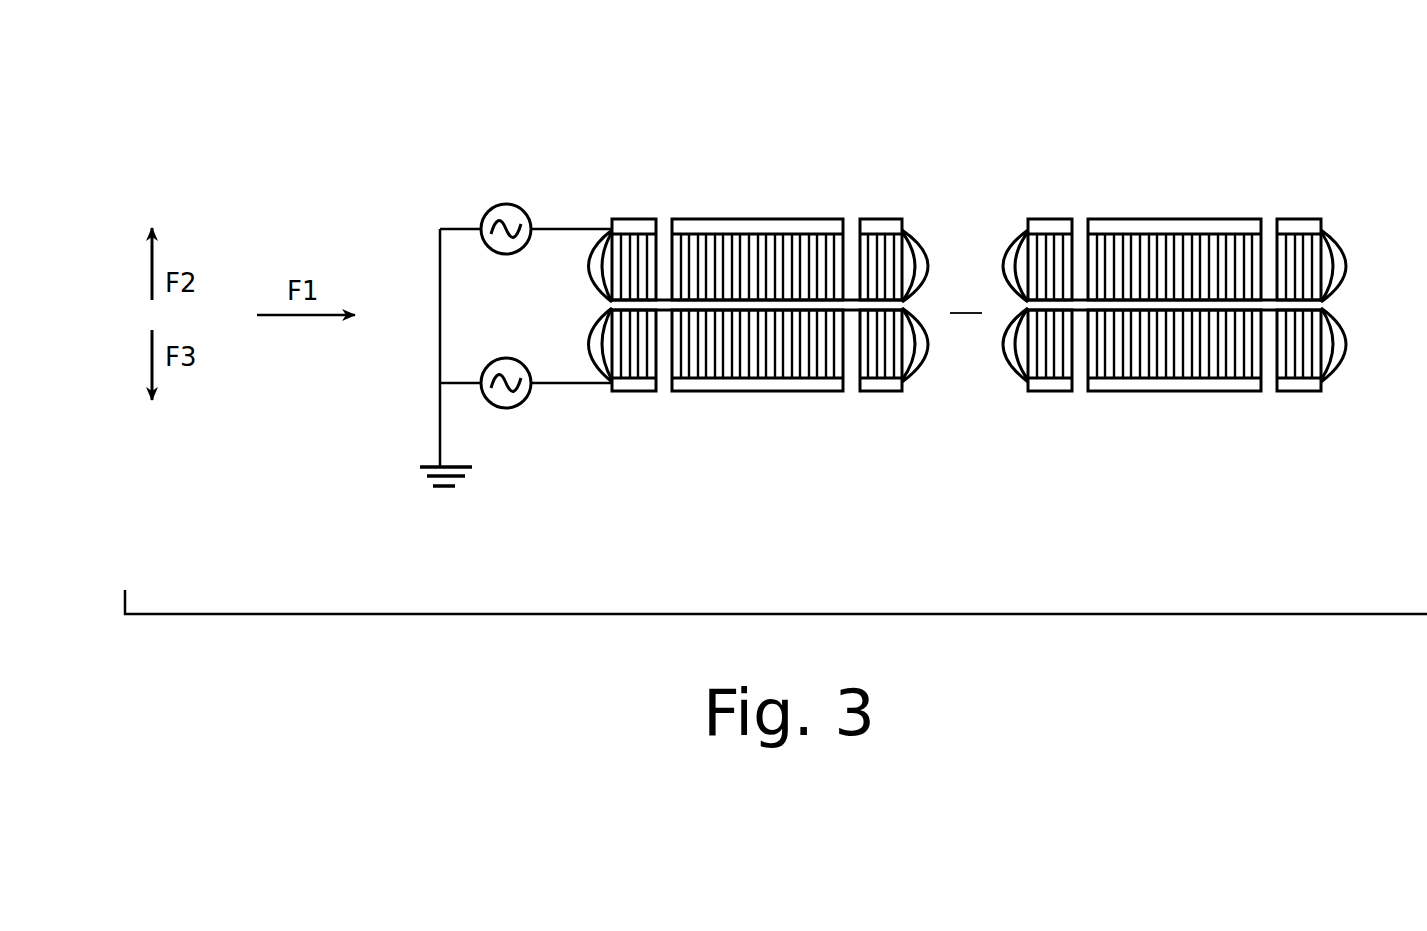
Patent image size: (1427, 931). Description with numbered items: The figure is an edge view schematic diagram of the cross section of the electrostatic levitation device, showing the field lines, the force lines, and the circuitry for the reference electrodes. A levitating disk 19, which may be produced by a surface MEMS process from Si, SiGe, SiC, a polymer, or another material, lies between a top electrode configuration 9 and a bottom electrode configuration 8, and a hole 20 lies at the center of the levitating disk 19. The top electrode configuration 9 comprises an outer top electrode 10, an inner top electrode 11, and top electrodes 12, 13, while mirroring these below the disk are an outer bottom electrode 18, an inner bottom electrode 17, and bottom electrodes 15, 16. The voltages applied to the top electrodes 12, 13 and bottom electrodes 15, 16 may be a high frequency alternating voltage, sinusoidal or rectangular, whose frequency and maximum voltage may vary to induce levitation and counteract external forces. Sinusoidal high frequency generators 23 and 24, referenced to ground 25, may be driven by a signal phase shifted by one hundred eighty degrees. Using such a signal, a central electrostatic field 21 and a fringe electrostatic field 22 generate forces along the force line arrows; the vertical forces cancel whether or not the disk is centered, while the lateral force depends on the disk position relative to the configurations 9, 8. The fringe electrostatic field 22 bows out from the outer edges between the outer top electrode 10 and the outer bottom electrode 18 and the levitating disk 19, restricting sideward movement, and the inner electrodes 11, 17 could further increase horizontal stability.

The bottom electrode configuration 8 is at (1228, 514).
The top electrode configuration 9 is at (815, 89).
The outer top electrode 10 is at (645, 226).
The inner top electrode 11 is at (895, 226).
The top electrode 12 is at (770, 226).
The top electrode 13 is at (1170, 226).
The bottom electrode 15 is at (785, 386).
The bottom electrode 16 is at (1170, 386).
The inner bottom electrode 17 is at (885, 386).
The outer bottom electrode 18 is at (645, 386).
The levitating disk 19 is at (612, 305).
The hole 20 is at (965, 299).
The central electrostatic field 21 is at (825, 252).
The fringe electrostatic field 22 is at (589, 246).
The sinusoidal high frequency generator 23 is at (506, 204).
The sinusoidal high frequency generator 24 is at (506, 408).
The ground 25 is at (428, 478).